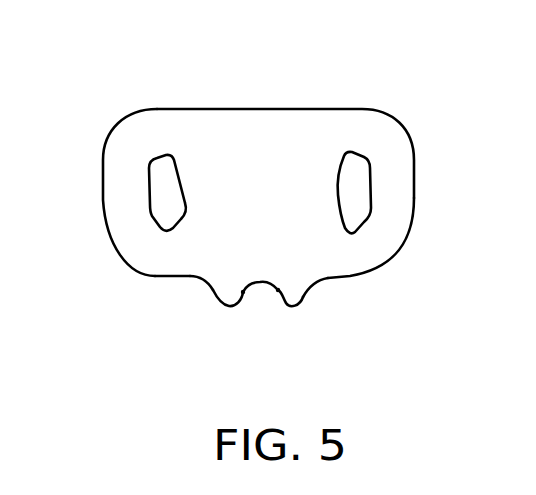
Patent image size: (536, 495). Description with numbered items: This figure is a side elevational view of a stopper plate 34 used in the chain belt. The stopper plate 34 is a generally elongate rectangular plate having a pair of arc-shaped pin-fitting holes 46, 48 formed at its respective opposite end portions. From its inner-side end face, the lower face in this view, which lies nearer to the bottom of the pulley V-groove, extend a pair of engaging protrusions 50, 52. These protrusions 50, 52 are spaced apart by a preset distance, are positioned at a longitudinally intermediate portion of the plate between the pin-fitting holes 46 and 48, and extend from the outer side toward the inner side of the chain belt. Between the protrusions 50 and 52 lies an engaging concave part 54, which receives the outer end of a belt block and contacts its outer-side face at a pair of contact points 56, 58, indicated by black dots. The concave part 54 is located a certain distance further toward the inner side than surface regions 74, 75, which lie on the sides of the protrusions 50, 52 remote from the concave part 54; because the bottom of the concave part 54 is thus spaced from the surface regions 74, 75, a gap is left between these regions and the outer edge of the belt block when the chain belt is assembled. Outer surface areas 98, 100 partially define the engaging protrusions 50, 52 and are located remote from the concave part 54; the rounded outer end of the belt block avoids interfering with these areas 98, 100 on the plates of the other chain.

The stopper plate 34 is at (96, 99).
The pin-fitting hole 46 is at (164, 155).
The pin-fitting hole 48 is at (367, 160).
The engaging protrusion 50 is at (220, 297).
The engaging protrusion 52 is at (303, 297).
The engaging concave part 54 is at (262, 284).
The contact point 56 is at (244, 294).
The contact point 58 is at (278, 290).
The surface region 74 is at (170, 277).
The surface region 75 is at (352, 273).
The outer surface area 98 is at (213, 293).
The outer surface area 100 is at (305, 300).